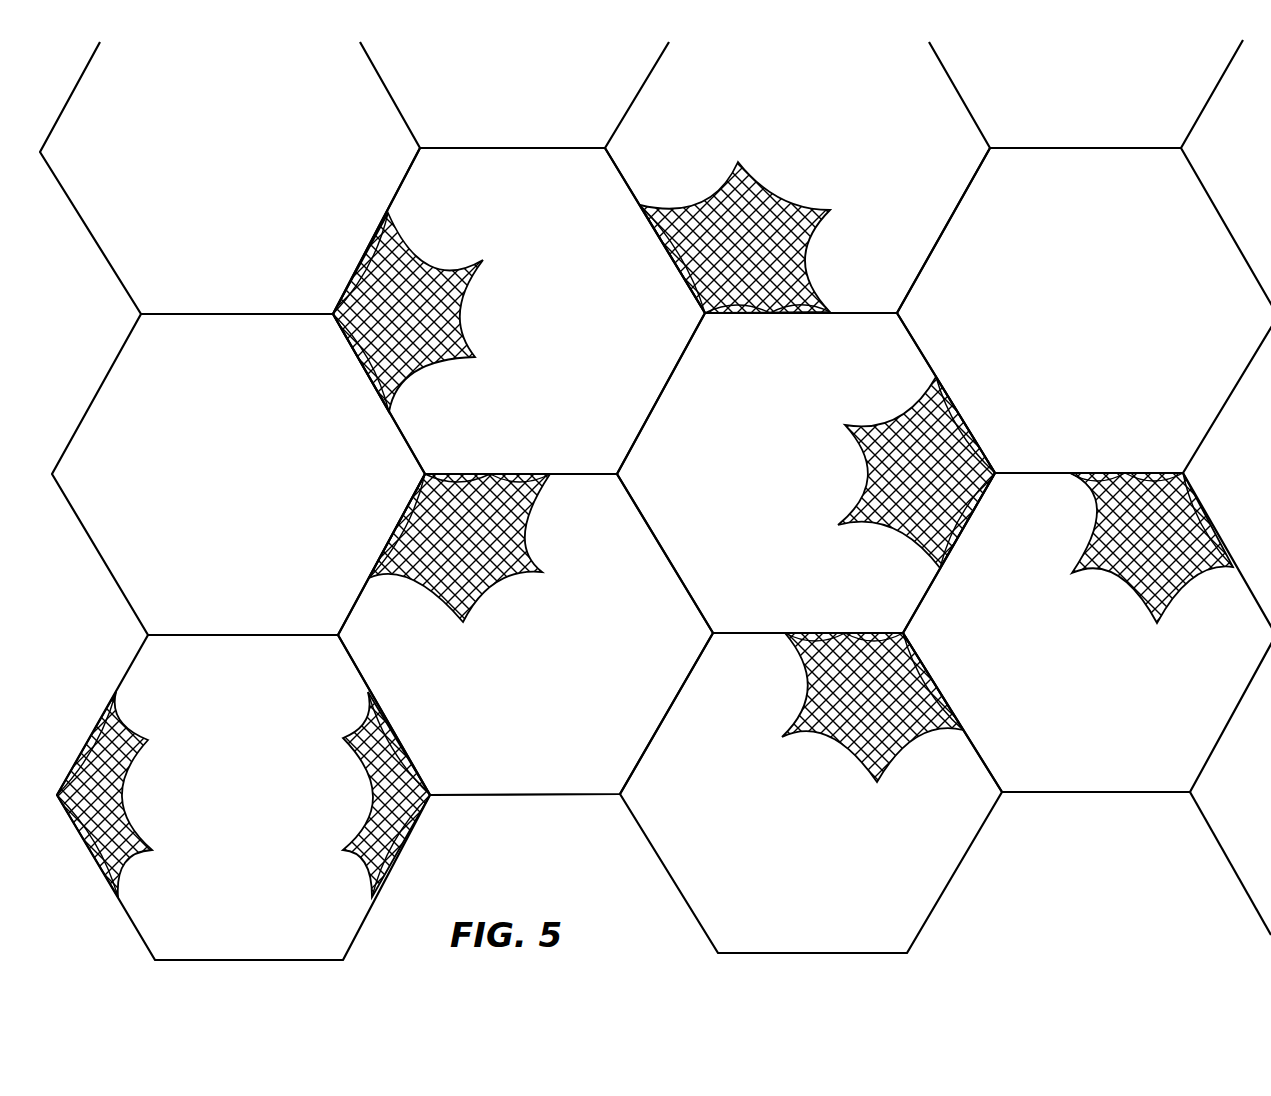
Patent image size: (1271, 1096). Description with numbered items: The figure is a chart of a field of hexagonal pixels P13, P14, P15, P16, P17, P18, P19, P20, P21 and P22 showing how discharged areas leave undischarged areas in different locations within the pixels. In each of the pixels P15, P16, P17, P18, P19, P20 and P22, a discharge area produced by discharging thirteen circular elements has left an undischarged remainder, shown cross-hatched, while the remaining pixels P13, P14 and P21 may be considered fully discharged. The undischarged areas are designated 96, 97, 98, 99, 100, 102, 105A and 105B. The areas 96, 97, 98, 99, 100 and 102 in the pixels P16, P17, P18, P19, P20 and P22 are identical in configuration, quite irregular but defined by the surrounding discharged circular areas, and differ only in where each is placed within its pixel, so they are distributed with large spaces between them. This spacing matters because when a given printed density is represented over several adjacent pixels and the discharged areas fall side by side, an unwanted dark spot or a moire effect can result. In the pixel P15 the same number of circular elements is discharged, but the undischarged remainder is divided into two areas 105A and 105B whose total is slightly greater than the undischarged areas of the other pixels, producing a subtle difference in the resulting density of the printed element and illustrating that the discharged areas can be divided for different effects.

The undischarged area 96 is at (423, 260).
The undischarged area 97 is at (526, 538).
The undischarged area 98 is at (806, 255).
The undischarged area 99 is at (920, 550).
The undischarged area 100 is at (807, 678).
The undischarged area 102 is at (1093, 523).
The undischarged area 105A is at (130, 873).
The undischarged area 105B is at (368, 876).
The pixel P13 is at (247, 177).
The pixel P14 is at (251, 489).
The pixel P15 is at (253, 814).
The pixel P16 is at (531, 327).
The pixel P17 is at (549, 652).
The pixel P18 is at (809, 169).
The pixel P19 is at (807, 484).
The pixel P20 is at (827, 807).
The pixel P21 is at (1101, 326).
The pixel P22 is at (1101, 646).